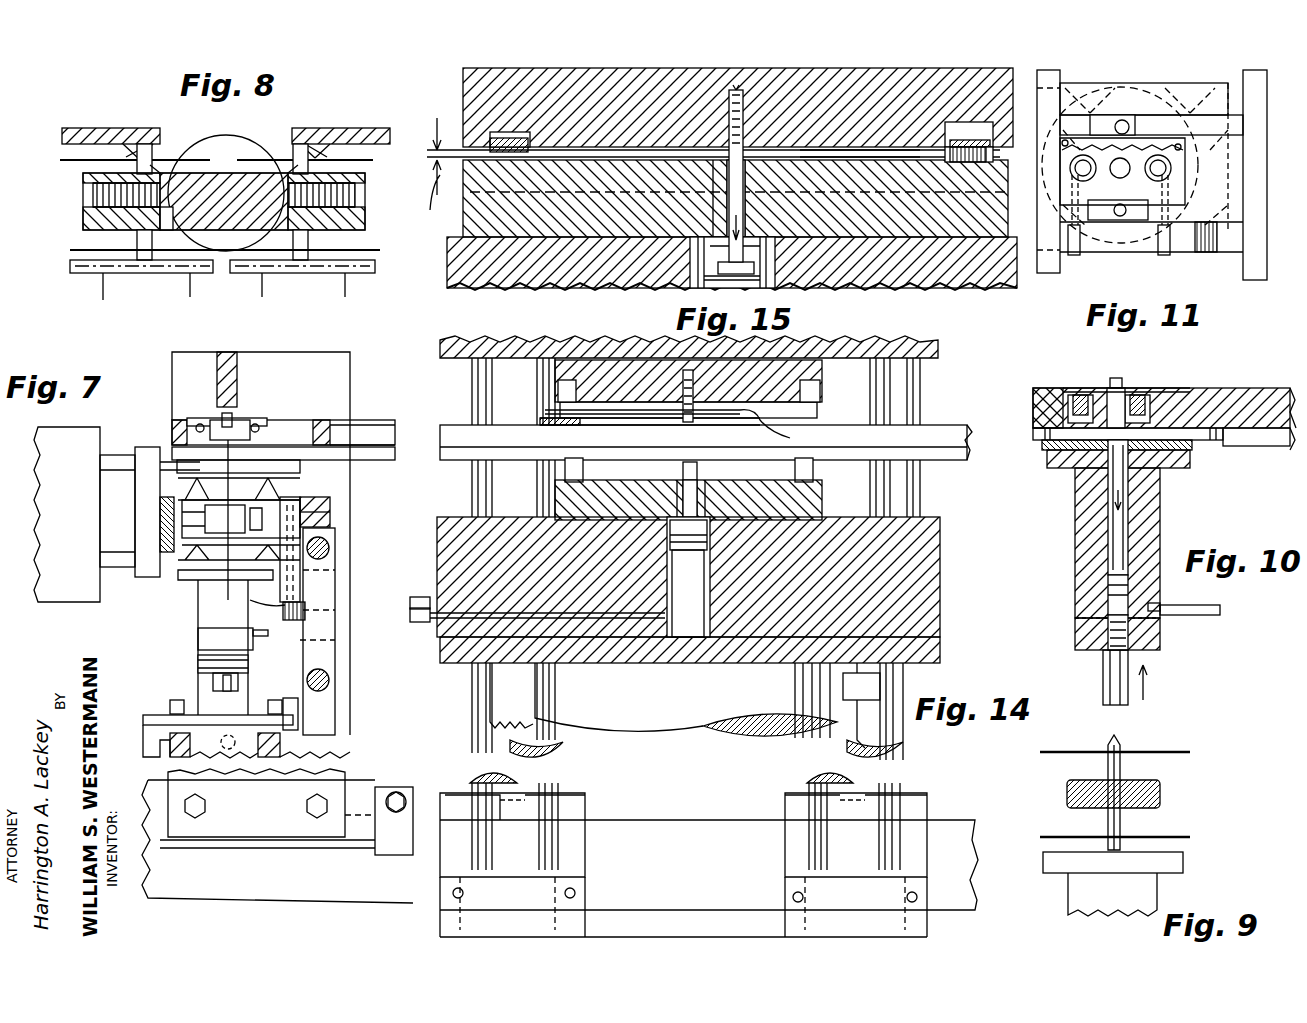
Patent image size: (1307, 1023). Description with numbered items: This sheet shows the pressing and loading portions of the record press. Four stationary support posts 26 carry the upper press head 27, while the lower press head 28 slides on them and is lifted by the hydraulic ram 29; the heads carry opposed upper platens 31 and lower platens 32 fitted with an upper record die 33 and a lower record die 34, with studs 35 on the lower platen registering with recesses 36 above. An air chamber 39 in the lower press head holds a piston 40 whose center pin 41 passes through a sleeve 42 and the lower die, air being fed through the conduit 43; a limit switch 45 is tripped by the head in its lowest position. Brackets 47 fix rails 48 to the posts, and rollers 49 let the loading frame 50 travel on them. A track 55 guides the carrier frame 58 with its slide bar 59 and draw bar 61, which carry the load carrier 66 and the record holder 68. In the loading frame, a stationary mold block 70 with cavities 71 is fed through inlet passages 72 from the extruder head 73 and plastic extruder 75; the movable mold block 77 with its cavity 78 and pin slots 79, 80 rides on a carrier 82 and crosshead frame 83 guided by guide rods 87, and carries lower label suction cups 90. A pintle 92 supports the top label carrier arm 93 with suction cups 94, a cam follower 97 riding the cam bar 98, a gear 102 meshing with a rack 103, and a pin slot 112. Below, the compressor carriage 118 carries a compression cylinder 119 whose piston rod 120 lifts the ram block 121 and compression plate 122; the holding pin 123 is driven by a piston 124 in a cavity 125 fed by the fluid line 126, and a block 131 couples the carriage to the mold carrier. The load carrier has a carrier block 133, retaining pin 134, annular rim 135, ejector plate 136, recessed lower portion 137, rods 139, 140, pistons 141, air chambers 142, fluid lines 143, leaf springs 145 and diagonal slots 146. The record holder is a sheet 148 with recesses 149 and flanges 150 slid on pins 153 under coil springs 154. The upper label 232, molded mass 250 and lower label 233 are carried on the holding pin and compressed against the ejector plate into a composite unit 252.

In FIG. 14, the support posts 26 is at (518, 854).
In FIG. 14, the upper press head 27 is at (462, 362).
In FIG. 15, the lower press head 28 is at (950, 276).
In FIG. 14, the lower press head 28 is at (870, 596).
In FIG. 14, the hydraulic ram 29 is at (678, 701).
In FIG. 15, the upper platens 31 is at (905, 104).
In FIG. 14, the upper platens 31 is at (612, 383).
In FIG. 15, the lower platens 32 is at (953, 226).
In FIG. 14, the lower platens 32 is at (805, 514).
In FIG. 15, the upper record die 33 is at (566, 150).
In FIG. 14, the upper record die 33 is at (688, 393).
In FIG. 15, the lower record die 34 is at (737, 176).
In FIG. 14, the lower record die 34 is at (688, 500).
In FIG. 15, the studs 35 is at (945, 160).
In FIG. 14, the studs 35 is at (563, 476).
In FIG. 15, the holes or recesses 36 is at (534, 100).
In FIG. 14, the holes or recesses 36 is at (545, 376).
In FIG. 15, the cylindrical air chamber 39 is at (760, 252).
In FIG. 14, the cylindrical air chamber 39 is at (705, 584).
In FIG. 15, the piston 40 is at (775, 270).
In FIG. 14, the piston 40 is at (710, 540).
In FIG. 15, the center pin 41 is at (698, 262).
In FIG. 14, the center pin 41 is at (672, 470).
In FIG. 15, the vertical sleeve 42 is at (705, 215).
In FIG. 14, the vertical sleeve 42 is at (700, 503).
In FIG. 7, the conduit 43 is at (425, 597).
In FIG. 14, the conduit 43 is at (422, 606).
In FIG. 14, the limit switch 45 is at (860, 690).
In FIG. 7, the brackets 47 is at (262, 830).
In FIG. 14, the brackets 47 is at (460, 795).
In FIG. 7, the rails 48 is at (322, 886).
In FIG. 14, the rails 48 is at (968, 860).
In FIG. 7, the rollers 49 is at (400, 792).
In FIG. 7, the loading frame 50 is at (180, 380).
In FIG. 7, the carrier rail or track 55 is at (392, 460).
In FIG. 15, the carrier rail or track 55 is at (732, 263).
In FIG. 14, the carrier rail or track 55 is at (935, 462).
In FIG. 7, the carrier frame 58 is at (325, 418).
In FIG. 11, the carrier frame 58 is at (1258, 190).
In FIG. 10, the carrier frame 58 is at (1043, 376).
In FIG. 15, the slide bar 59 is at (465, 222).
In FIG. 14, the slide bar 59 is at (945, 424).
In FIG. 7, the draw bar 61 is at (378, 426).
In FIG. 7, the load carrier 66 is at (265, 410).
In FIG. 11, the load carrier 66 is at (1248, 164).
In FIG. 10, the load carrier 66 is at (1248, 385).
In FIG. 15, the record holder 68 is at (472, 127).
In FIG. 14, the record holder 68 is at (546, 412).
In FIG. 8, the stationary mold block 70 is at (224, 173).
In FIG. 7, the stationary mold block 70 is at (165, 490).
In FIG. 8, the mold cavities 71 is at (157, 180).
In FIG. 7, the mold cavities 71 is at (290, 525).
In FIG. 8, the inlet passage 72 is at (165, 182).
In FIG. 8, the extruder head 73 is at (222, 258).
In FIG. 7, the extruder head 73 is at (170, 490).
In FIG. 7, the plastic extruder 75 is at (78, 554).
In FIG. 8, the movable mold block 77 is at (83, 182).
In FIG. 7, the movable mold block 77 is at (275, 530).
In FIG. 8, the mold cavity 78 is at (83, 200).
In FIG. 8, the top pin slot 79 is at (122, 144).
In FIG. 8, the bottom pin slot 80 is at (265, 230).
In FIG. 7, the carrier 82 is at (300, 578).
In FIG. 7, the crosshead frame 83 is at (335, 636).
In FIG. 7, the guide rods 87 is at (330, 550).
In FIG. 8, the lower label suction cups 90 is at (90, 228).
In FIG. 7, the pintle 92 is at (258, 600).
In FIG. 8, the top label carrier arm 93 is at (68, 128).
In FIG. 7, the top label carrier arm 93 is at (180, 460).
In FIG. 8, the top label suction cups 94 is at (112, 138).
In FIG. 7, the cam follower 97 is at (332, 495).
In FIG. 7, the cam bar 98 is at (330, 510).
In FIG. 7, the gear 102 is at (288, 625).
In FIG. 7, the rack 103 is at (305, 608).
In FIG. 8, the pin slot 112 is at (144, 144).
In FIG. 7, the compressor carriage 118 is at (172, 715).
In FIG. 7, the compression cylinder 119 is at (242, 770).
In FIG. 7, the piston rod 120 is at (200, 662).
In FIG. 10, the piston rod 120 is at (1105, 670).
In FIG. 8, the ram block 121 is at (103, 292).
In FIG. 7, the ram block 121 is at (223, 647).
In FIG. 10, the ram block 121 is at (1075, 552).
In FIG. 9, the ram block 121 is at (1126, 904).
In FIG. 8, the compression plate 122 is at (70, 270).
In FIG. 10, the compression plate 122 is at (1185, 468).
In FIG. 9, the compression plate 122 is at (1180, 870).
In FIG. 8, the holding pin 123 is at (144, 273).
In FIG. 10, the holding pin 123 is at (1113, 528).
In FIG. 9, the holding pin 123 is at (1122, 769).
In FIG. 10, the piston 124 is at (1103, 598).
In FIG. 10, the cylindrical cavity 125 is at (1100, 574).
In FIG. 10, the fluid line 126 is at (1200, 612).
In FIG. 7, the block 131 is at (298, 713).
In FIG. 7, the carrier block 133 is at (302, 415).
In FIG. 11, the carrier block 133 is at (1130, 86).
In FIG. 10, the carrier block 133 is at (1238, 388).
In FIG. 11, the retaining pin 134 is at (1120, 165).
In FIG. 10, the retaining pin 134 is at (1116, 378).
In FIG. 10, the annular rim 135 is at (1215, 452).
In FIG. 11, the ejector plate 136 is at (1150, 252).
In FIG. 10, the ejector plate 136 is at (1033, 433).
In FIG. 10, the lower portion of retaining pin 137 is at (1075, 475).
In FIG. 11, the rods 139 is at (1170, 162).
In FIG. 10, the rods 139 is at (1082, 395).
In FIG. 11, the rods 140 is at (1122, 120).
In FIG. 11, the pistons 141 is at (1168, 172).
In FIG. 10, the pistons 141 is at (1033, 401).
In FIG. 11, the air chambers 142 is at (1165, 168).
In FIG. 10, the air chambers 142 is at (1180, 390).
In FIG. 11, the fluid lines 143 is at (1068, 256).
In FIG. 11, the leaf springs 145 is at (1145, 130).
In FIG. 11, the diagonal slots 146 is at (1205, 105).
In FIG. 15, the sheet material 148 is at (431, 188).
In FIG. 15, the semicircular recesses 149 is at (604, 150).
In FIG. 14, the semicircular recesses 149 is at (600, 422).
In FIG. 15, the flanges 150 is at (484, 138).
In FIG. 14, the flanges 150 is at (772, 428).
In FIG. 15, the vertical pins 153 is at (741, 102).
In FIG. 14, the vertical pins 153 is at (683, 374).
In FIG. 15, the coil spring 154 is at (745, 110).
In FIG. 14, the coil spring 154 is at (683, 392).
In FIG. 8, the upper label 232 is at (62, 160).
In FIG. 9, the upper label 232 is at (1166, 752).
In FIG. 8, the lower label 233 is at (70, 250).
In FIG. 9, the lower label 233 is at (1170, 837).
In FIG. 9, the molded mass 250 is at (1162, 795).
In FIG. 10, the composite unit 252 is at (1036, 460).